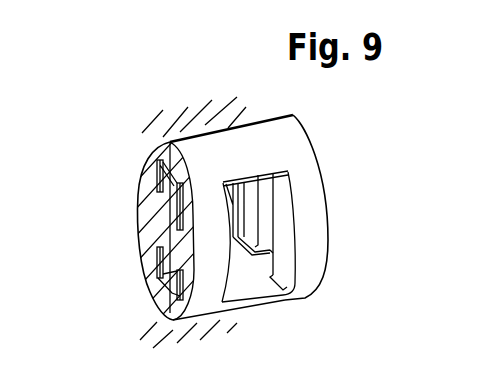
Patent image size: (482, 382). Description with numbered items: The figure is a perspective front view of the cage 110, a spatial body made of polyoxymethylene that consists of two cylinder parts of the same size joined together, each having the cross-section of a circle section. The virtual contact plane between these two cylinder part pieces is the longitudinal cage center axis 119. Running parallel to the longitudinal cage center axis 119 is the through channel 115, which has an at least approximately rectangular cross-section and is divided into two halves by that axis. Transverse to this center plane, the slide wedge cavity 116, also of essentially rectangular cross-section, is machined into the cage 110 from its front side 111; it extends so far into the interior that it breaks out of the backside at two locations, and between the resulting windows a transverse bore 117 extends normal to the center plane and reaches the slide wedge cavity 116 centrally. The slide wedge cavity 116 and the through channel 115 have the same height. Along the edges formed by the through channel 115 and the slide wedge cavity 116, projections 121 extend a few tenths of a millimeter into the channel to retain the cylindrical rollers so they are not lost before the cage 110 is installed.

The cage 110 is at (313, 150).
The front side 111 is at (307, 212).
The through channel 115 is at (263, 222).
The slide wedge cavity 116 is at (282, 272).
The transverse bore 117 is at (230, 192).
The longitudinal cage center axis 119 is at (173, 123).
The projections 121 is at (250, 262).